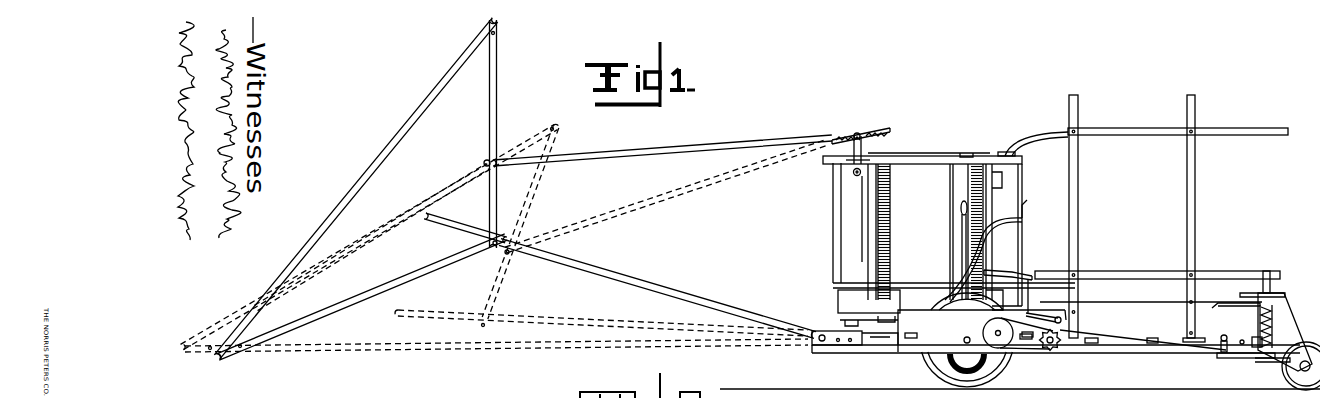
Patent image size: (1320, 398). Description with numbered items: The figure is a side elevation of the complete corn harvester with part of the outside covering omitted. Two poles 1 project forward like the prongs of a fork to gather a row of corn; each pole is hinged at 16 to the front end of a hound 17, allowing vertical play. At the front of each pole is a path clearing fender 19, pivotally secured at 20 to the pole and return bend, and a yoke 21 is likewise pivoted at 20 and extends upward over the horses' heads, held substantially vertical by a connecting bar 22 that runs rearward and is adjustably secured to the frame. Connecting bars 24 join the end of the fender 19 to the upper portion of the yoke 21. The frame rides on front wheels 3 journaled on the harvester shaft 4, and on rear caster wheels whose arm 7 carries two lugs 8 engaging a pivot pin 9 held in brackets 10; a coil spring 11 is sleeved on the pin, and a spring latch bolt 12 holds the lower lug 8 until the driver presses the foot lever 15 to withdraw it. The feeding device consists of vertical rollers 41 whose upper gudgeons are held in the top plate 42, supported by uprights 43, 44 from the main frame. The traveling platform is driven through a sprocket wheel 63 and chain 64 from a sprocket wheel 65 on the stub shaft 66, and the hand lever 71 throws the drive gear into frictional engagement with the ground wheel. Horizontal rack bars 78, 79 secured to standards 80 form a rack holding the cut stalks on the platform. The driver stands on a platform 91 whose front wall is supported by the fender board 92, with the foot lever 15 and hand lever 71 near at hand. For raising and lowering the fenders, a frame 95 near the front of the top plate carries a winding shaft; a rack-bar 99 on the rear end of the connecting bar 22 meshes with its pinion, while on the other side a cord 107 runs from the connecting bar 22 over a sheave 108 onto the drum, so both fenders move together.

The pole 1 is at (718, 299).
The front wheel 3 is at (935, 364).
The harvester shaft 4 is at (963, 340).
The arm 7 is at (1297, 322).
The lug 8 is at (1258, 295).
The pivot pin 9 is at (1275, 302).
The bracket 10 is at (1242, 306).
The coil spring 11 is at (1258, 330).
The spring latch bolt 12 is at (1301, 365).
The foot lever 15 is at (997, 270).
The hinge 16 is at (816, 330).
The hound 17 is at (873, 351).
The fender 19 is at (397, 277).
The pivot 20 is at (496, 251).
The yoke 21 is at (503, 118).
The connecting bar 22 is at (710, 142).
The connecting bar 24 is at (400, 150).
The vertical roller 41 is at (956, 179).
The top plate 42 is at (938, 154).
The upright 43 is at (832, 222).
The upright 44 is at (1024, 240).
The sprocket wheel 63 is at (1054, 350).
The chain 64 is at (1026, 356).
The sprocket wheel 65 is at (985, 329).
The stub shaft 66 is at (997, 337).
The lever 71 is at (962, 234).
The rack bar 78 is at (1118, 274).
The rack bar 79 is at (1112, 134).
The standard 80 is at (1084, 182).
The platform 91 is at (900, 284).
The fender board 92 is at (869, 308).
The frame 95 is at (846, 165).
The rack-bar 99 is at (855, 132).
The cord 107 is at (905, 148).
The sheave 108 is at (1008, 152).